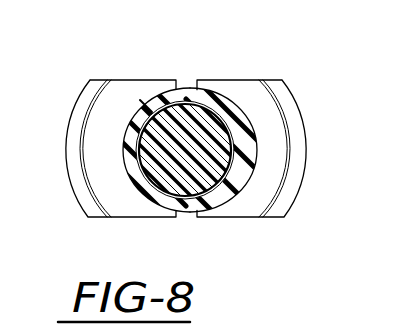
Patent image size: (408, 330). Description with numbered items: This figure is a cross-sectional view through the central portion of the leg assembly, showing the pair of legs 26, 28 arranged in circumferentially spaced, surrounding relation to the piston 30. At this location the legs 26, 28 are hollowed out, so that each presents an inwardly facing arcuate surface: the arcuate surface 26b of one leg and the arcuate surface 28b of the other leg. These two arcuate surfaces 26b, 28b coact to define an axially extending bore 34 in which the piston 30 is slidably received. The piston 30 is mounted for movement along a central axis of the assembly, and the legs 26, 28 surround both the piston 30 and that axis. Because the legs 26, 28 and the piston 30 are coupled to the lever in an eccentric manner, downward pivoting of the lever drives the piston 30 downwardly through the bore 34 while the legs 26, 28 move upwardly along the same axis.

The leg 26 is at (118, 162).
The leg 28 is at (254, 180).
The arcuate surface 26b is at (147, 128).
The arcuate surface 28b is at (228, 158).
The piston 30 is at (233, 123).
The bore 34 is at (146, 108).